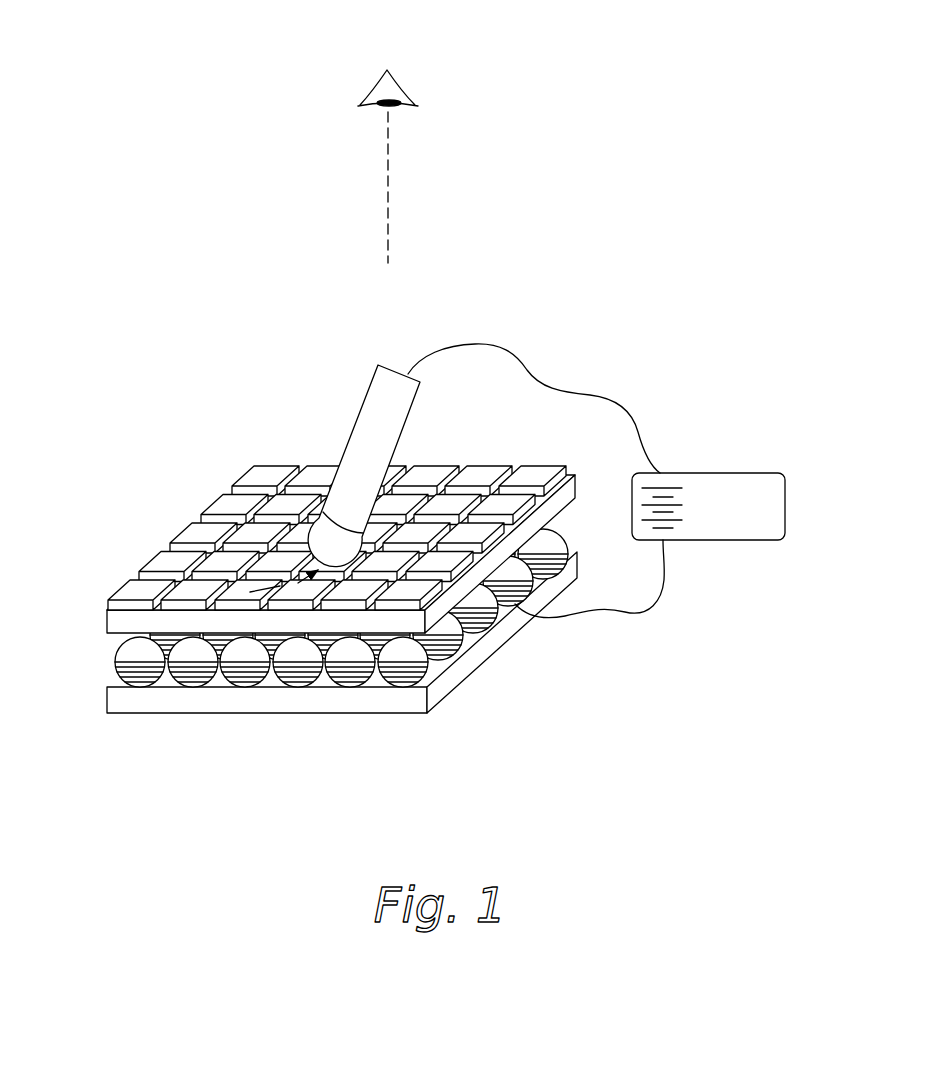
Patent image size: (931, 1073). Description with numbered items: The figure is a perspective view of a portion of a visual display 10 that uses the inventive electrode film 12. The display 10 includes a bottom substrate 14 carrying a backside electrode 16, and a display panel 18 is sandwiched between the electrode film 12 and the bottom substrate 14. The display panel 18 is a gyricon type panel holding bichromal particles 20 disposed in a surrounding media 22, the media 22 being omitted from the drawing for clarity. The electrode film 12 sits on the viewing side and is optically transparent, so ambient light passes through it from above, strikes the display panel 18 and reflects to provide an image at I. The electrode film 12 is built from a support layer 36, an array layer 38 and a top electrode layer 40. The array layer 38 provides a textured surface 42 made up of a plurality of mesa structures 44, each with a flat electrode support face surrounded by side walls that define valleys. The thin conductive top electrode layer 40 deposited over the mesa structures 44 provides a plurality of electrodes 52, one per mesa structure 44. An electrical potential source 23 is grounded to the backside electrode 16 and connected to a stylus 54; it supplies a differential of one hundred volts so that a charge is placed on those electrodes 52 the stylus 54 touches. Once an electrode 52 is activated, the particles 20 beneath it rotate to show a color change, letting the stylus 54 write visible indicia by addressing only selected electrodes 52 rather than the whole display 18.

The image I is at (398, 87).
The visual display 10 is at (215, 371).
The electrode film 12 is at (347, 518).
The bottom substrate 14 is at (342, 656).
The backside electrode 16 is at (270, 681).
The display panel 18 is at (311, 642).
The bichromal particles 20 is at (437, 673).
The surrounding media 22 is at (480, 633).
The electrical potential source 23 is at (742, 473).
The support layer 36 is at (578, 498).
The array layer 38 is at (578, 482).
The top electrode layer 40 is at (194, 529).
The textured surface 42 is at (337, 504).
The mesa structure 44 is at (163, 557).
The electrode 52 is at (491, 477).
The stylus 54 is at (358, 410).